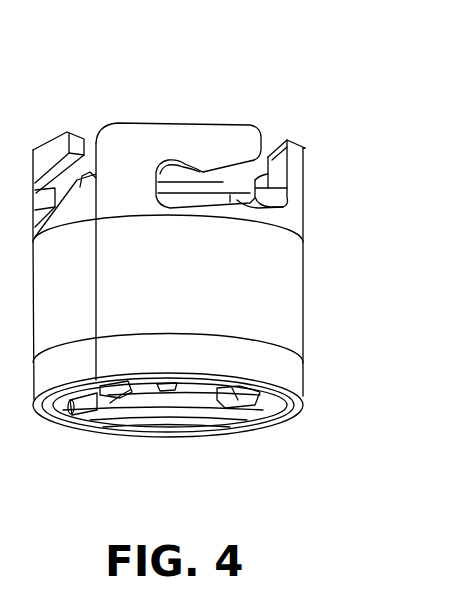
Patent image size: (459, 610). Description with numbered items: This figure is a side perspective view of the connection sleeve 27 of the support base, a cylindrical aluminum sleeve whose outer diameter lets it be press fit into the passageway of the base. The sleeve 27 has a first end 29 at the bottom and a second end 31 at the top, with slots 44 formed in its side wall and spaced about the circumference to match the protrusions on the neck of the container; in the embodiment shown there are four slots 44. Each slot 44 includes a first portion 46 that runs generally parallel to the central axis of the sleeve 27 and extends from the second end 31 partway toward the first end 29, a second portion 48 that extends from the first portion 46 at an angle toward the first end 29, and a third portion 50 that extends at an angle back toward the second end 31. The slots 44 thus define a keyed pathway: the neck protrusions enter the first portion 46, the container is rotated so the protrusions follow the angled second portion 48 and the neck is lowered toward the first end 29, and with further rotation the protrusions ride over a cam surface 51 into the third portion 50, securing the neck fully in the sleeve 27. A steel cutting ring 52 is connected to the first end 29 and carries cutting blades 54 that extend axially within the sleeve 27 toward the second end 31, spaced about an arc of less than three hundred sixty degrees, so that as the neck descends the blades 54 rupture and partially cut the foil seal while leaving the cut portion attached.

The sleeve 27 is at (303, 271).
The first end 29 is at (285, 400).
The second end 31 is at (304, 151).
The slots 44 is at (90, 140).
The first portion 46 is at (290, 152).
The second portion 48 is at (285, 207).
The third portion 50 is at (172, 163).
The cam surface 51 is at (198, 175).
The cutting ring 52 is at (275, 410).
The cutting blades 54 is at (100, 393).